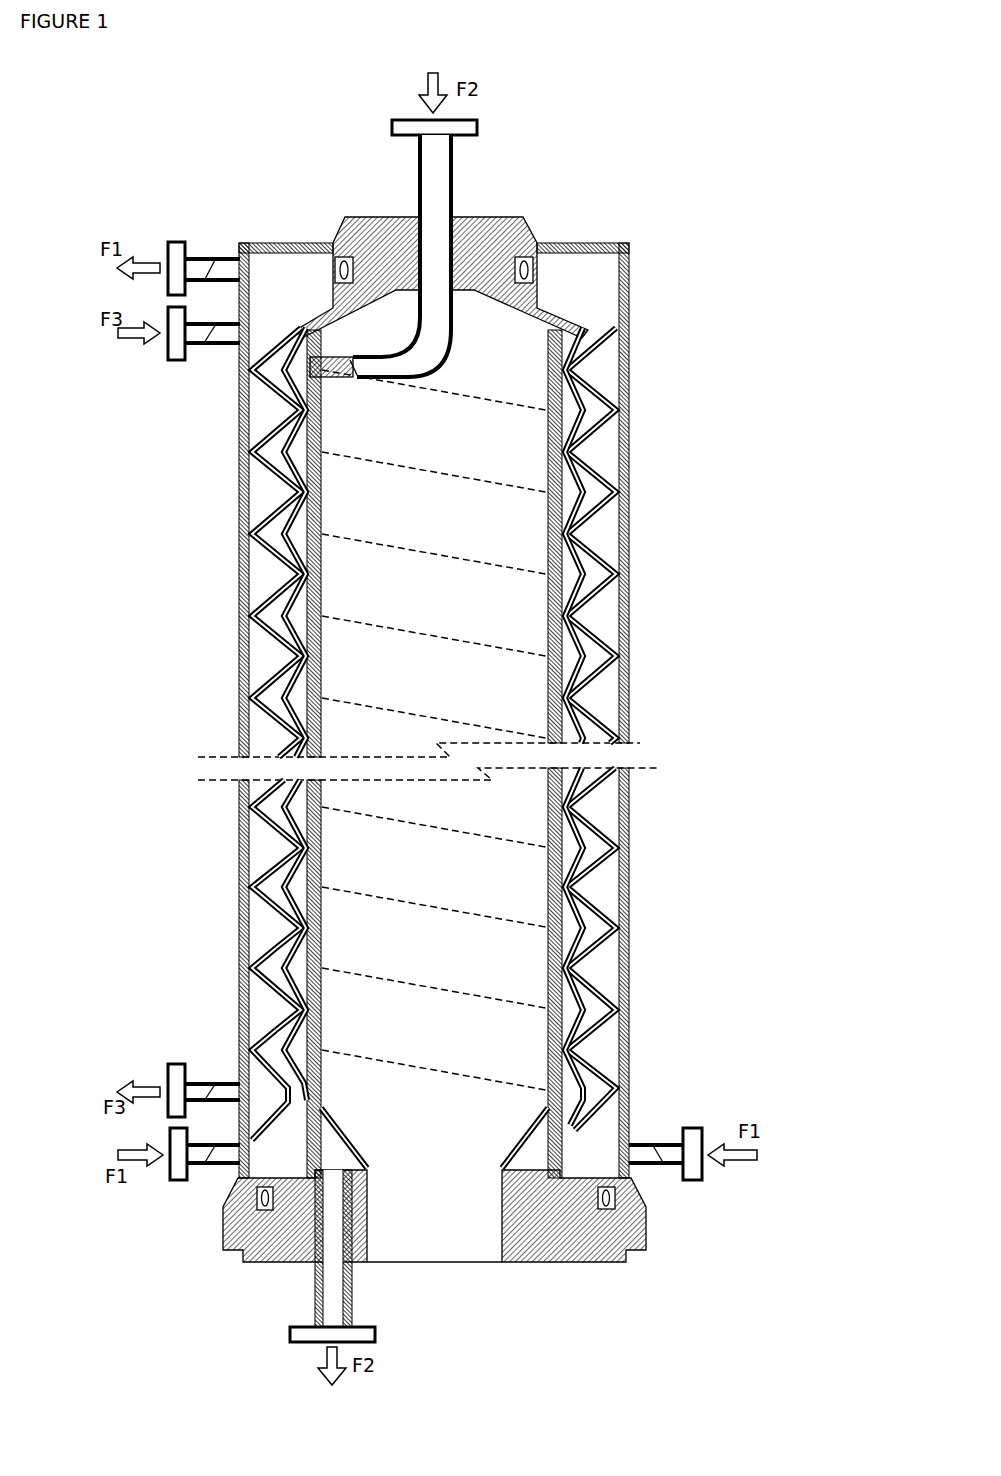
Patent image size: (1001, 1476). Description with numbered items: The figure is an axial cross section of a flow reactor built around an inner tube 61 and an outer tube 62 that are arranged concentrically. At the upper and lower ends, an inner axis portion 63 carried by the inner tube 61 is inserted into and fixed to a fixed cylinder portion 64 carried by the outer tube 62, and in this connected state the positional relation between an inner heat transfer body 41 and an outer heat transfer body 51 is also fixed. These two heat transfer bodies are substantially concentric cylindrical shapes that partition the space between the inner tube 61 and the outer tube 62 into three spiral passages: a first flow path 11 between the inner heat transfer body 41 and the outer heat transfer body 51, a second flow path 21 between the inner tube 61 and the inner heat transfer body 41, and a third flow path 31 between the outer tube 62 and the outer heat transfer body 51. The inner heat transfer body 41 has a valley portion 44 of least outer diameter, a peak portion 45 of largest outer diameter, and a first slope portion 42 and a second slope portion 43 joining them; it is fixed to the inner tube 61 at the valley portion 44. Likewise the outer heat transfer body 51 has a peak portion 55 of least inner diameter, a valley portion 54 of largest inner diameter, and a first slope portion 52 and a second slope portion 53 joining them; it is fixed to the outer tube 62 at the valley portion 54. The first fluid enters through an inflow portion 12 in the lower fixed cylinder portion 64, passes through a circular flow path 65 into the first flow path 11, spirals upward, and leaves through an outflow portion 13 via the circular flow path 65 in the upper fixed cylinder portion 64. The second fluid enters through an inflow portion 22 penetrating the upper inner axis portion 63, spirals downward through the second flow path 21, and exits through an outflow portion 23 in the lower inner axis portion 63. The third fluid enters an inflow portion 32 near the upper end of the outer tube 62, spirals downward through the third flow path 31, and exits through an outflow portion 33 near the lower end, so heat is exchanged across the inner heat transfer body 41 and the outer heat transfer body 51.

The first flow path 11 is at (262, 452).
The inflow portion 12 is at (208, 1150).
The outflow portion 13 is at (200, 260).
The second flow path 21 is at (307, 532).
The inflow portion 22 is at (455, 168).
The outflow portion 23 is at (355, 1285).
The third flow path 31 is at (262, 482).
The inflow portion 32 is at (208, 345).
The outflow portion 33 is at (198, 1166).
The inner heat transfer body 41 is at (262, 593).
The first slope portion 42 is at (262, 960).
The second slope portion 43 is at (262, 1000).
The valley portion 44 is at (262, 1020).
The peak portion 45 is at (262, 985).
The outer heat transfer body 51 is at (262, 553).
The first slope portion 52 is at (262, 845).
The second slope portion 53 is at (262, 858).
The valley portion 54 is at (262, 812).
The peak portion 55 is at (262, 880).
The inner tube 61 is at (265, 633).
The outer tube 62 is at (265, 667).
The inner axis portion 63 is at (355, 217).
The fixed cylinder portion 64 is at (285, 245).
The circular flow path 65 is at (574, 290).